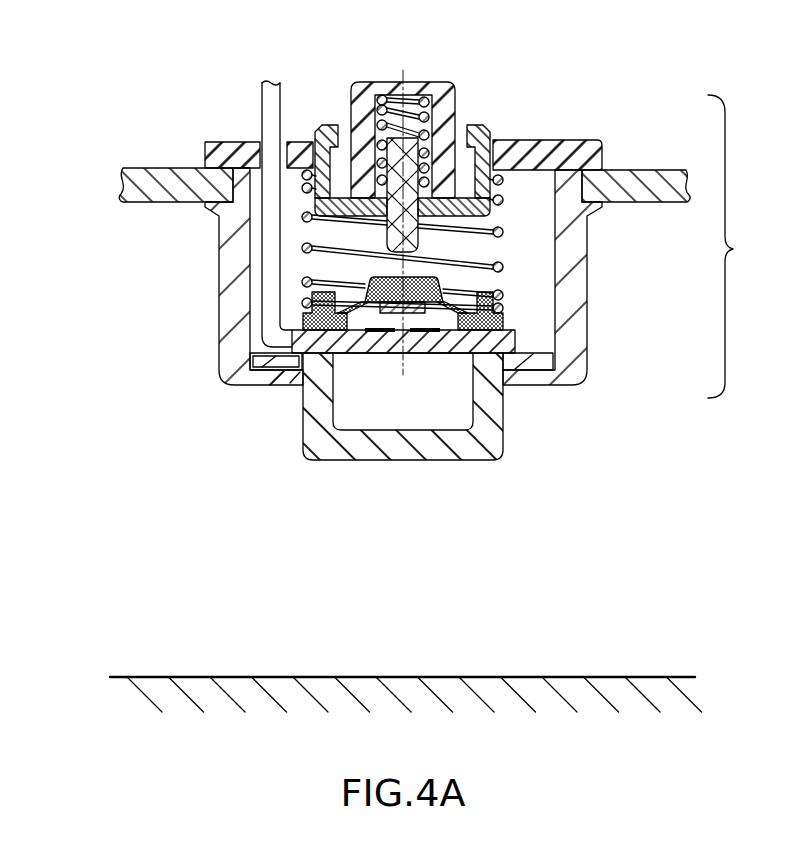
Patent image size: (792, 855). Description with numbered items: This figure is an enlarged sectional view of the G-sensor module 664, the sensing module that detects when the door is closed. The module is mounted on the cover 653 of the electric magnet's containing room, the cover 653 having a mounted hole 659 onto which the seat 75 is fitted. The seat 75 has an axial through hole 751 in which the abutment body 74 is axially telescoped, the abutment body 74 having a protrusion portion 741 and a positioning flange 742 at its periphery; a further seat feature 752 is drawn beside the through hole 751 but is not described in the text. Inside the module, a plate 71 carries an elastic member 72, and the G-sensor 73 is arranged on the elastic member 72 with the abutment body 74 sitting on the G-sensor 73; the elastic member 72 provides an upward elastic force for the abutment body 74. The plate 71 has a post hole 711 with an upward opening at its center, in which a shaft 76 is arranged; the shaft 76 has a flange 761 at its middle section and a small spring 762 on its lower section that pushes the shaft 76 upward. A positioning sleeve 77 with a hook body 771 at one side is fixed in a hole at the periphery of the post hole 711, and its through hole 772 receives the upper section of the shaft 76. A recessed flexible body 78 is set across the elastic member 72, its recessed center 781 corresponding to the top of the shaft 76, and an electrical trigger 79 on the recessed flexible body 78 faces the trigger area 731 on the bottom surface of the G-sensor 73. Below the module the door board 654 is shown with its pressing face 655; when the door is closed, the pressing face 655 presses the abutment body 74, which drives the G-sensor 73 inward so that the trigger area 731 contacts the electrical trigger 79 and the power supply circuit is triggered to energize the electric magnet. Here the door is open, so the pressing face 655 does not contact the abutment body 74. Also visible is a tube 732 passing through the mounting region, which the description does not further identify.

The plate 71 is at (457, 94).
The post hole 711 is at (397, 100).
The elastic member 72 is at (516, 342).
The G-sensor 73 is at (452, 355).
The trigger area 731 is at (437, 425).
The abutment body 74 is at (347, 478).
The protrusion portion 741 is at (328, 447).
The positioning flange 742 is at (279, 385).
The seat 75 is at (220, 352).
The axial through hole 751 is at (263, 363).
The second plate 752 is at (263, 385).
The shaft 76 is at (500, 182).
The flange 761 is at (500, 233).
The small spring 762 is at (500, 258).
The positioning sleeve 77 is at (303, 192).
The hook body 771 is at (316, 208).
The through hole 772 is at (303, 297).
The recessed flexible body 78 is at (533, 352).
The recessed center 781 is at (553, 342).
The electrical trigger 79 is at (503, 372).
The cover 653 is at (122, 185).
The door board 654 is at (668, 697).
The pressing face 655 is at (477, 677).
The mounted hole 659 is at (260, 170).
The G-sensor module 664 is at (743, 246).
The tube 732 is at (280, 112).